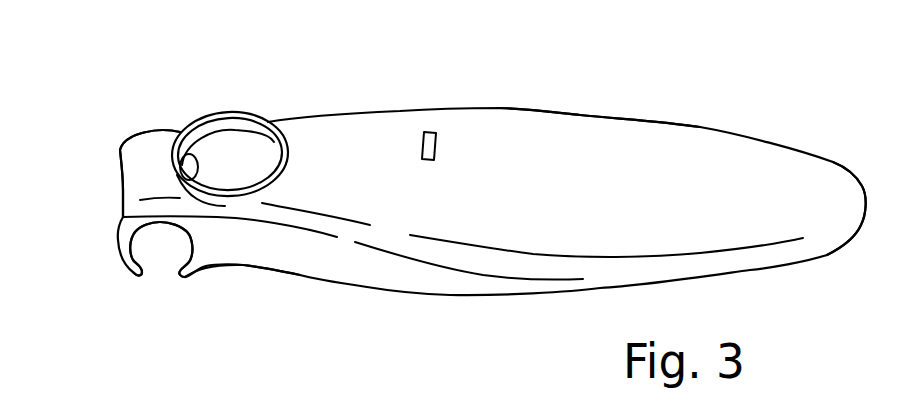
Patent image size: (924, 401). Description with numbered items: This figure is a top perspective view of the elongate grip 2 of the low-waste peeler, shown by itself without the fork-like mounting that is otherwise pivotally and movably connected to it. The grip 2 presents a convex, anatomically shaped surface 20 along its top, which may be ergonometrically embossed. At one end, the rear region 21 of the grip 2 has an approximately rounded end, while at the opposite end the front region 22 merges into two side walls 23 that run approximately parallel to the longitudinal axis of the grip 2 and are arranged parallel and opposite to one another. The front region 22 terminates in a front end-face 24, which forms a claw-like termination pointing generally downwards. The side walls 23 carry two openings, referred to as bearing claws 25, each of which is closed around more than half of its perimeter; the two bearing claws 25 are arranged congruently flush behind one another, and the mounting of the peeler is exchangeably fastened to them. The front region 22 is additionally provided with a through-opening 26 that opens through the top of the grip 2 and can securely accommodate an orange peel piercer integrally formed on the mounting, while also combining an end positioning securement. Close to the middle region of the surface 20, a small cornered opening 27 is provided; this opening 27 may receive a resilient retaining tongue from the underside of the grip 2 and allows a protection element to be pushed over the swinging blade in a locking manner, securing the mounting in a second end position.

The elongate grip 2 is at (518, 101).
The convex, anatomically shaped surface 20 is at (585, 135).
The rear region 21 is at (813, 197).
The front region 22 is at (145, 173).
The side walls 23 is at (268, 252).
The front end-face 24 is at (125, 190).
The bearing claws 25 is at (163, 250).
The through-opening 26 is at (235, 150).
The small cornered opening 27 is at (432, 132).